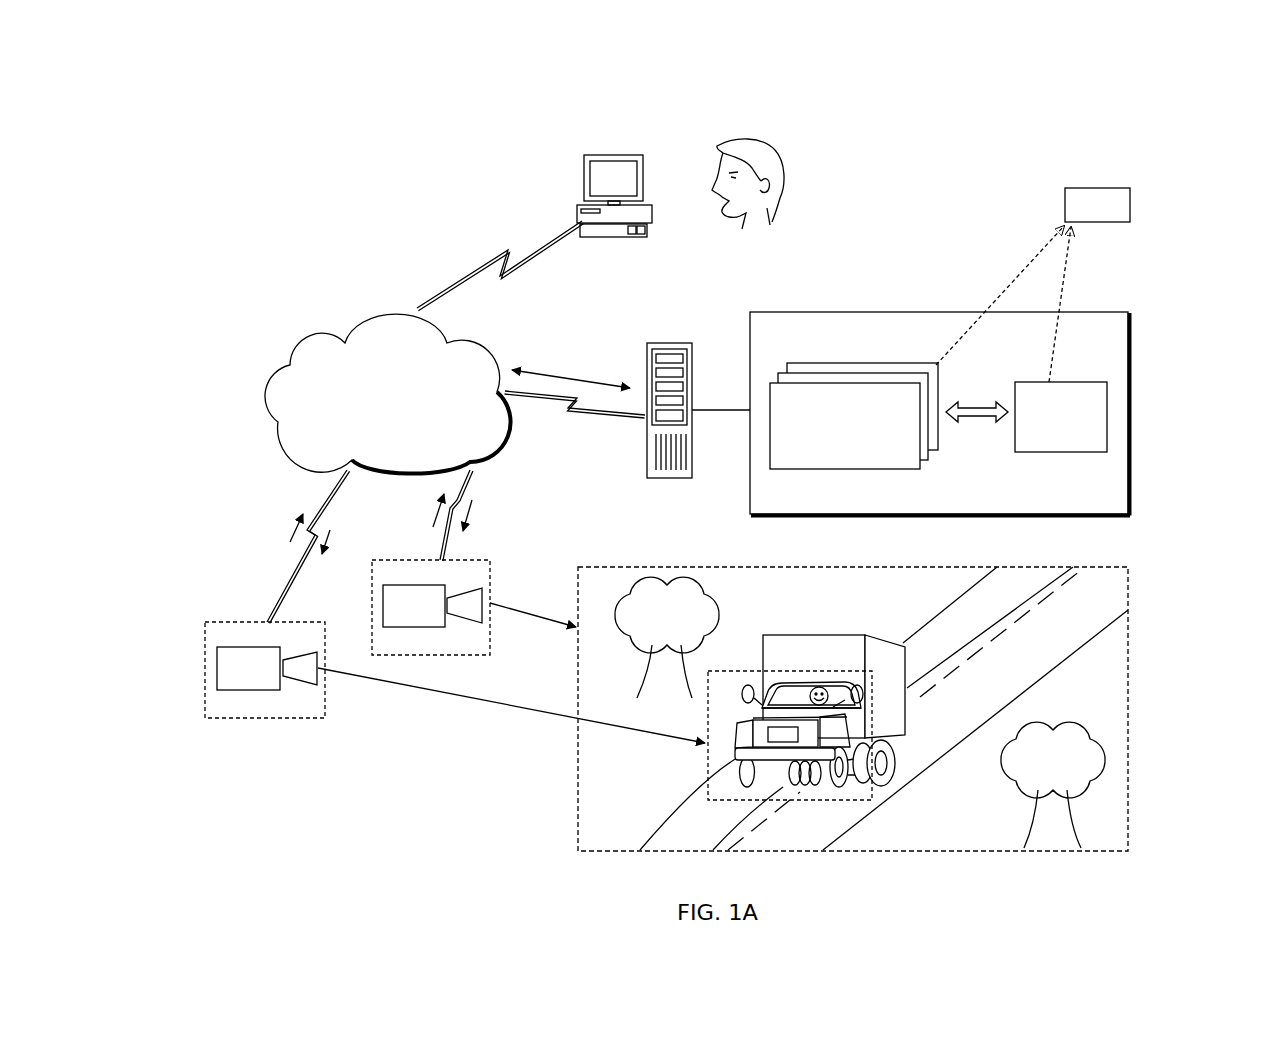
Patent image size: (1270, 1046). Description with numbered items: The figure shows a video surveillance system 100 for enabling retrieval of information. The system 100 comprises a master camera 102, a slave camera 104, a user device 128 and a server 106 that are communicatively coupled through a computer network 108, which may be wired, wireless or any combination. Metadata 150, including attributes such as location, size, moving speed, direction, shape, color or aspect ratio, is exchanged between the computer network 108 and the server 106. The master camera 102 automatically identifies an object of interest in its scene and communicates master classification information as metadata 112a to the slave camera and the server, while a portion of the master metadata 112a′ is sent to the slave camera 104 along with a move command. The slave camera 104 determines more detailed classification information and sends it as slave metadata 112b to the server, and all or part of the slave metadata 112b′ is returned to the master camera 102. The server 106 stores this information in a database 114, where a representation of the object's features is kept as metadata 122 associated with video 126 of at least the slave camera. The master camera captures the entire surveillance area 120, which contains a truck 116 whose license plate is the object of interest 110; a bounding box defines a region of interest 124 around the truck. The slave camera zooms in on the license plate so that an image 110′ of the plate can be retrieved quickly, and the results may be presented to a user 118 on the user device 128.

The video surveillance system 100 is at (1018, 144).
The master camera 102 is at (477, 622).
The slave camera 104 is at (312, 688).
The server 106 is at (673, 343).
The computer network 108 is at (412, 436).
The license plate 110 is at (787, 760).
The image of the license plate 110′ is at (1110, 188).
The master metadata 112a is at (435, 508).
The portion of master metadata 112a′ is at (325, 548).
The slave metadata 112b is at (291, 538).
The portion of slave metadata 112b′ is at (475, 505).
The database 114 is at (883, 339).
The truck 116 is at (835, 635).
The user 118 is at (796, 182).
The surveillance area 120 is at (1130, 690).
The metadata 122 is at (877, 468).
The region of interest 124 is at (733, 670).
The video 126 is at (1068, 382).
The user device 128 is at (584, 182).
The metadata 150 is at (557, 370).